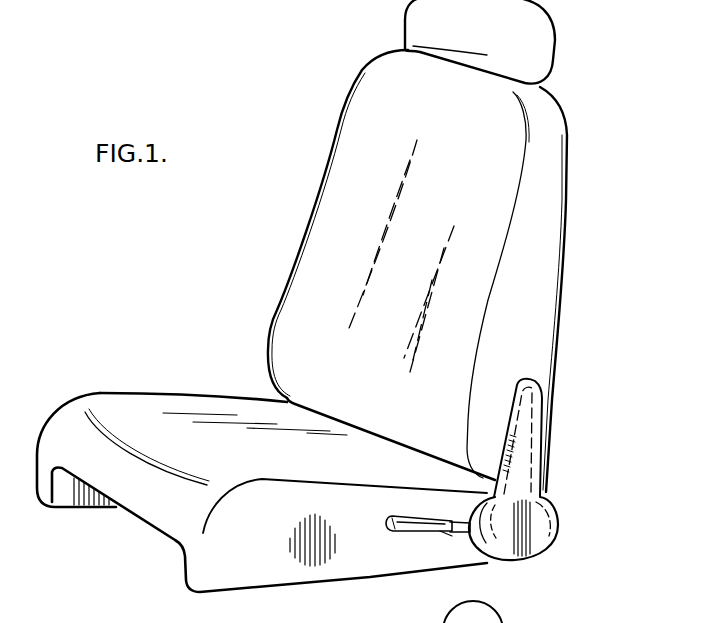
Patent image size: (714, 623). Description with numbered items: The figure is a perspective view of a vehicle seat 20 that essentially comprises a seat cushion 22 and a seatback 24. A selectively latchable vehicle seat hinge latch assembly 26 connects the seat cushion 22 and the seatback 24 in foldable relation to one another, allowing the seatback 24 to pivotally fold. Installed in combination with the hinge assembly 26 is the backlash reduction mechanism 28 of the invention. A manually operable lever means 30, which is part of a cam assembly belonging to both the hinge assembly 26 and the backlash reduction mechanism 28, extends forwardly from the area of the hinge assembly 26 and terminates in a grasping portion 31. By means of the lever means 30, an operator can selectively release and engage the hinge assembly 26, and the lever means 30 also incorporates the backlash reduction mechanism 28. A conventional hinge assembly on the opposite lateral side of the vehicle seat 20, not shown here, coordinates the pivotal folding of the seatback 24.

The vehicle seat 20 is at (247, 247).
The seat cushion 22 is at (277, 560).
The seatback 24 is at (547, 210).
The selectively latchable vehicle seat hinge latch assembly 26 is at (570, 484).
The backlash reduction mechanism 28 is at (492, 545).
The manually operable lever means 30 is at (458, 536).
The grasping portion 31 is at (413, 537).